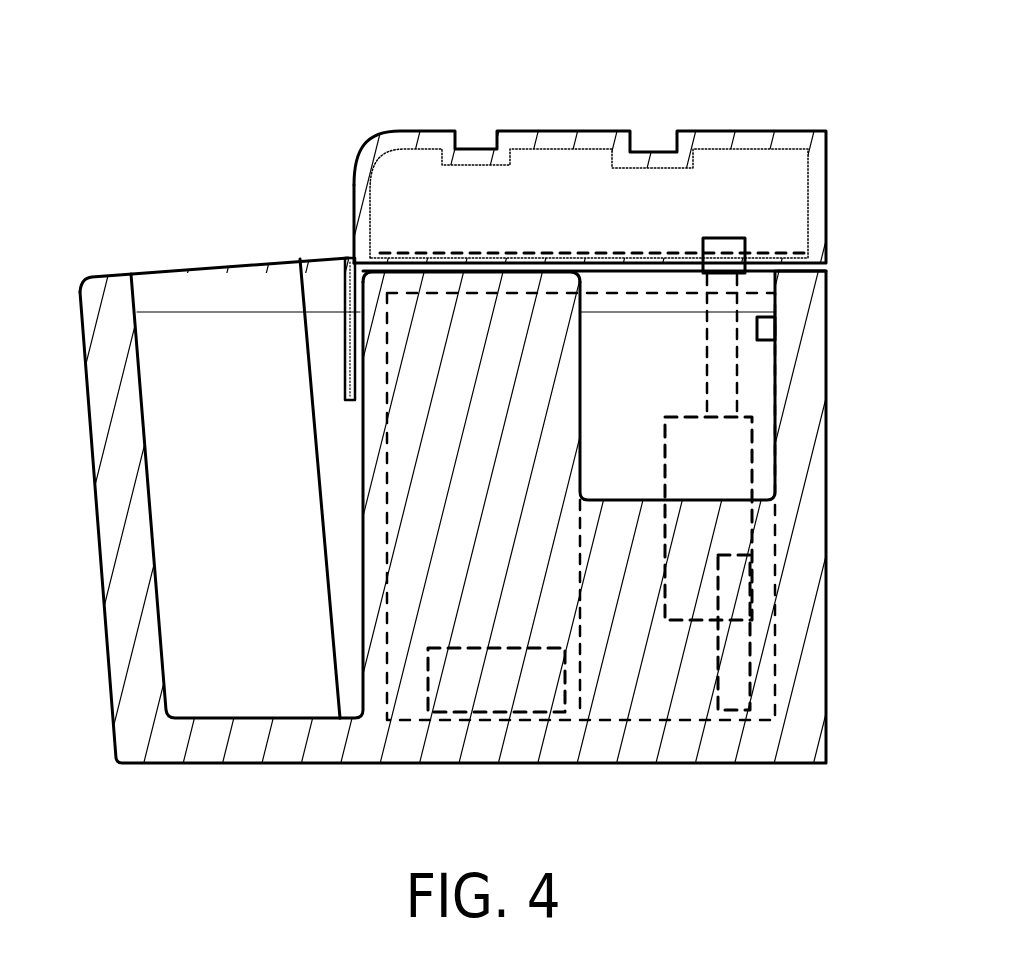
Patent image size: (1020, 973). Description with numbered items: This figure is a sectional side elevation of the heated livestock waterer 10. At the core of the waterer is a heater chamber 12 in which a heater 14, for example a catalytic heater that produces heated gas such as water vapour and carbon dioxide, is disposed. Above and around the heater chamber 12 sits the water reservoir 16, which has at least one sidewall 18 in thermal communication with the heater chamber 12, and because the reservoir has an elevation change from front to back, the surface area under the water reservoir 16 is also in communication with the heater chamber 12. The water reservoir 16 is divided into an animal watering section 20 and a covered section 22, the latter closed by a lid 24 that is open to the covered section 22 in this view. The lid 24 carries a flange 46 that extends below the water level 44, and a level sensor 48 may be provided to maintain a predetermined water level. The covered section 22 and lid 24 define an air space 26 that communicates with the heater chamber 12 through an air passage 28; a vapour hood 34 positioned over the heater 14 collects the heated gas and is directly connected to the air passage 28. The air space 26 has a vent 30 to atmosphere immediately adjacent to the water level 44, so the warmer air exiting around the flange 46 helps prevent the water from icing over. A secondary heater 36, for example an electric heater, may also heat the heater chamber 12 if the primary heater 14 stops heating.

The heated livestock waterer 10 is at (170, 91).
The heater chamber 12 is at (658, 675).
The heater 14 is at (740, 664).
The water reservoir 16 is at (200, 645).
The sidewall 18 is at (370, 617).
The animal watering section 20 is at (197, 340).
The covered section 22 is at (762, 402).
The lid 24 is at (737, 142).
The air space 26 is at (800, 262).
The air passage 28 is at (733, 285).
The vent 30 is at (340, 257).
The vapour hood 34 is at (740, 521).
The secondary heater 36 is at (542, 687).
The water level 44 is at (212, 310).
The flange 46 is at (342, 332).
The level sensor 48 is at (773, 330).